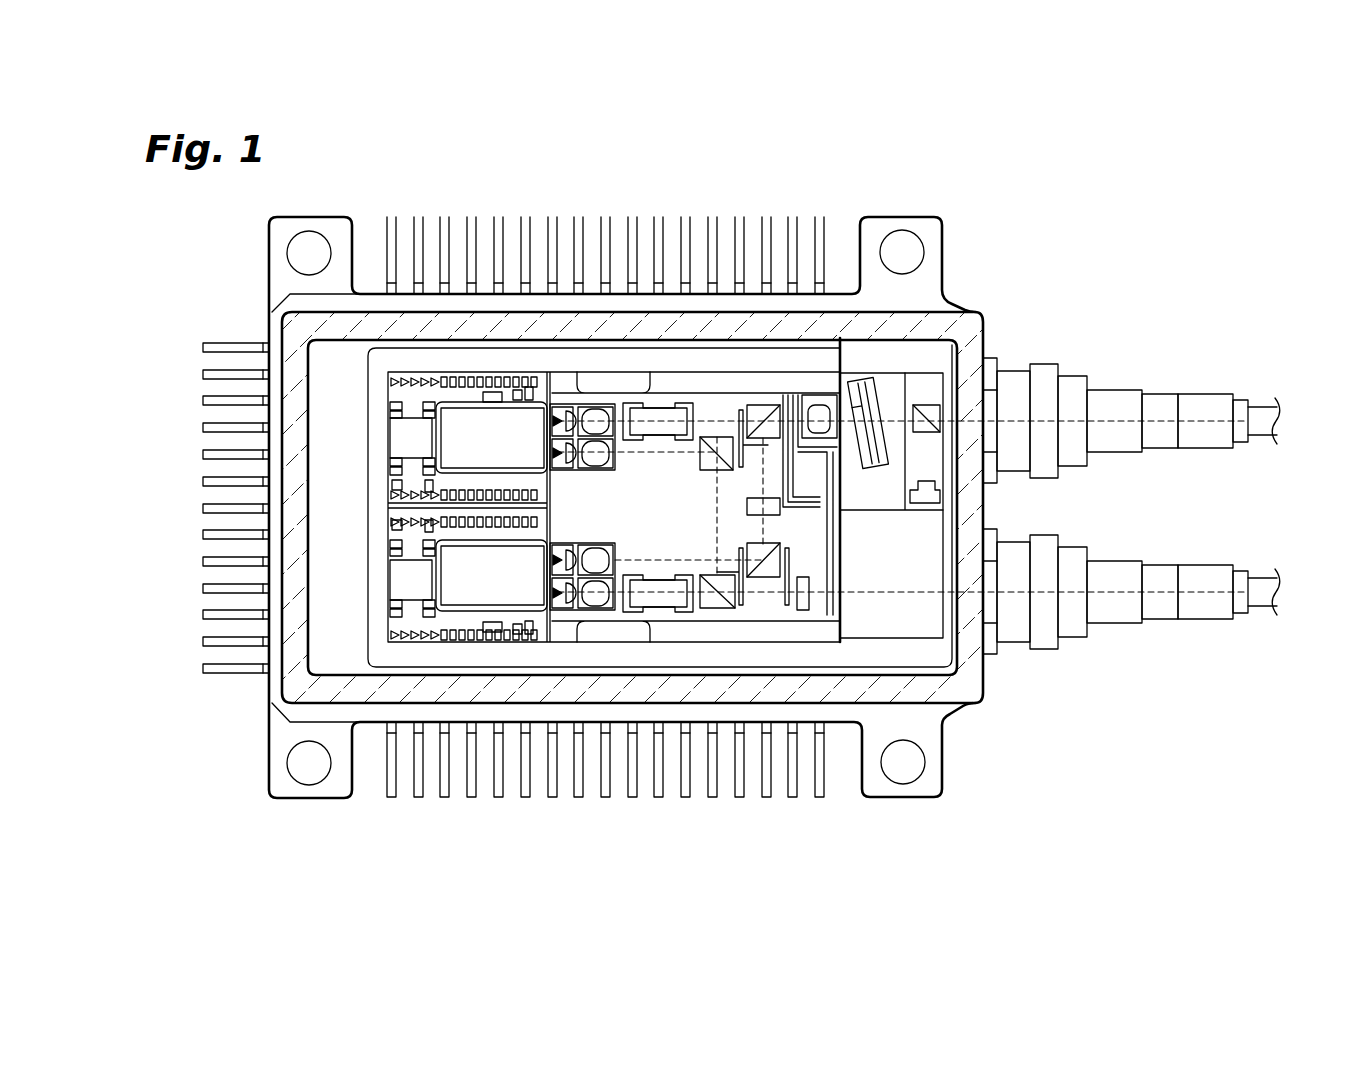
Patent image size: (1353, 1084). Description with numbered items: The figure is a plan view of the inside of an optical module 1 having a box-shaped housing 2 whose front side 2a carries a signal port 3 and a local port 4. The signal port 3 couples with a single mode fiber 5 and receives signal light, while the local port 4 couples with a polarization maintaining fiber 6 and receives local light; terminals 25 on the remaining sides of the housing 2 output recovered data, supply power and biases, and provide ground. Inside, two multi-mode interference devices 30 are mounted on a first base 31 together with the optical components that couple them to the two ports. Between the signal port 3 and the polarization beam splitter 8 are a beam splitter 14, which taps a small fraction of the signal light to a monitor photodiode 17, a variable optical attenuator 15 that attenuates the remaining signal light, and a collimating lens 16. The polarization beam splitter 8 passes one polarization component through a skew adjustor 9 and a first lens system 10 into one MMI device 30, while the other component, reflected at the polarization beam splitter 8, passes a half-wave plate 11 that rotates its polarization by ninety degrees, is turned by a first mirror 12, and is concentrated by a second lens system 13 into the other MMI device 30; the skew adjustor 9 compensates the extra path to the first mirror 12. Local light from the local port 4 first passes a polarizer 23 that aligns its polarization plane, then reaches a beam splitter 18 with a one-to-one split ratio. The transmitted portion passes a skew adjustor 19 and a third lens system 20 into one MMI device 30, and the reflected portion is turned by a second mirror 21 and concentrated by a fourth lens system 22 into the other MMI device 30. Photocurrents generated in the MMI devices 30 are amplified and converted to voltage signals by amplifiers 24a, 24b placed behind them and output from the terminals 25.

The optical module 1 is at (1108, 212).
The housing 2 is at (985, 321).
The front side of housing 2a is at (983, 508).
The signal port 3 is at (987, 348).
The local port 4 is at (987, 665).
The single mode fiber 5 is at (1263, 417).
The polarization maintaining fiber 6 is at (1258, 588).
The polarization beam splitter 8 is at (763, 410).
The skew adjustor 9 is at (657, 432).
The first lens system 10 is at (602, 448).
The half-wave plate 11 is at (747, 505).
The first mirror 12 is at (780, 568).
The second lens system 13 is at (575, 567).
The beam splitter 14 is at (928, 405).
The variable optical attenuator 15 is at (866, 462).
The collimating lens 16 is at (817, 410).
The monitor photodiode 17 is at (923, 497).
The beam splitter 18 is at (715, 603).
The skew adjustor 19 is at (657, 582).
The third lens system 20 is at (593, 608).
The second mirror 21 is at (720, 445).
The fourth lens system 22 is at (593, 412).
The polarizer 23 is at (812, 600).
The amplifier 24a is at (412, 575).
The amplifier 24b is at (412, 437).
The terminals 25 is at (238, 668).
The multi-mode interference device 30 is at (455, 420).
The first base 31 is at (658, 395).